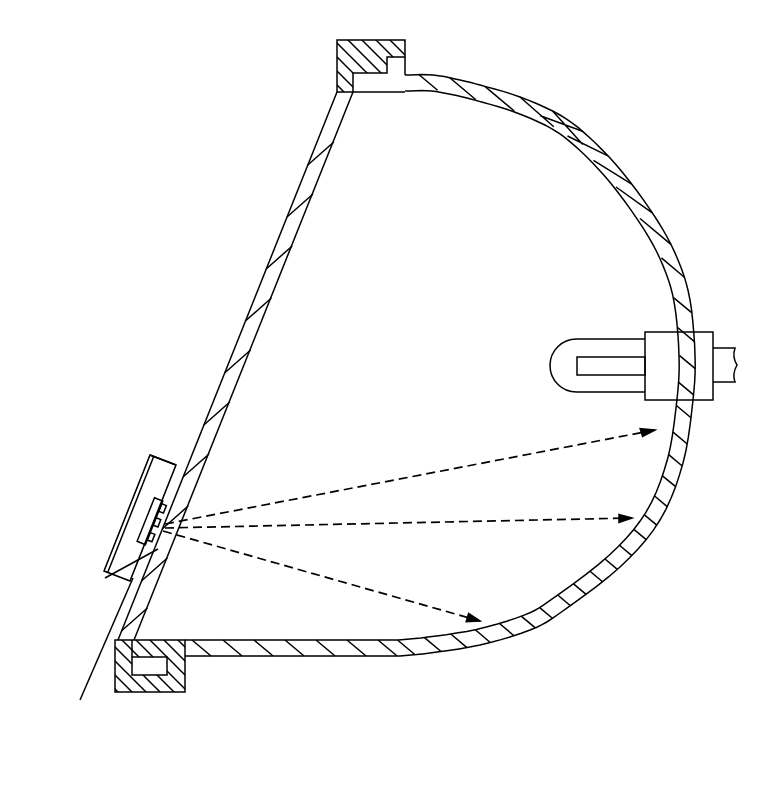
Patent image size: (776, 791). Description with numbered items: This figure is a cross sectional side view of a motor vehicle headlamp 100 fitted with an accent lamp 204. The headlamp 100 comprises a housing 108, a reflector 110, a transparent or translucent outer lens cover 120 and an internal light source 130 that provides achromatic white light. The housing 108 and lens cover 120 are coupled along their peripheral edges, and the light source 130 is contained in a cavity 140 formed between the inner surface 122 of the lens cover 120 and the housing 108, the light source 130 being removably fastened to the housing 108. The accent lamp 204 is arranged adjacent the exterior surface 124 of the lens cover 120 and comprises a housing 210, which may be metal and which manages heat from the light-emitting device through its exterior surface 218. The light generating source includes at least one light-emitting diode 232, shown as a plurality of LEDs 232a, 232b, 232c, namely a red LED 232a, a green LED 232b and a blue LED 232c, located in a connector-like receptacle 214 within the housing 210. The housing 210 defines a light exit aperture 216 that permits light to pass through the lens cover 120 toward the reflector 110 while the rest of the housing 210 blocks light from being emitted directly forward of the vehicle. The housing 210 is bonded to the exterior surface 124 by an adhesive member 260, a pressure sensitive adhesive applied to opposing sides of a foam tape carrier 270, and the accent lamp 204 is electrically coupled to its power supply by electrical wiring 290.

The headlamp 100 is at (93, 108).
The housing 108 is at (636, 170).
The reflector 110 is at (660, 263).
The outer lens cover 120 is at (256, 209).
The inner surface of lens cover 122 is at (270, 302).
The exterior surface of lens cover 124 is at (244, 353).
The internal light source 130 is at (550, 340).
The cavity 140 is at (454, 217).
The accent lamp 204 is at (93, 407).
The housing 210 is at (196, 449).
The connector-like receptacle 214 is at (113, 574).
The light exit aperture 216 is at (160, 548).
The exterior surface of housing 218 is at (160, 452).
The light-emitting diode 232 is at (66, 462).
The red LED 232a is at (158, 508).
The green LED 232b is at (154, 522).
The blue LED 232c is at (149, 537).
The adhesive member 260 is at (160, 556).
The foam tape carrier 270 is at (159, 499).
The electrical wiring 290 is at (91, 672).